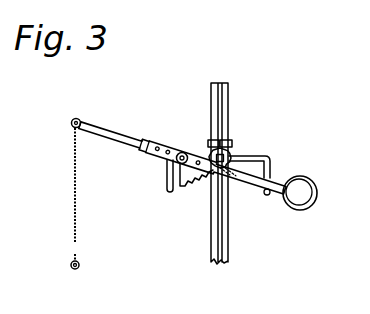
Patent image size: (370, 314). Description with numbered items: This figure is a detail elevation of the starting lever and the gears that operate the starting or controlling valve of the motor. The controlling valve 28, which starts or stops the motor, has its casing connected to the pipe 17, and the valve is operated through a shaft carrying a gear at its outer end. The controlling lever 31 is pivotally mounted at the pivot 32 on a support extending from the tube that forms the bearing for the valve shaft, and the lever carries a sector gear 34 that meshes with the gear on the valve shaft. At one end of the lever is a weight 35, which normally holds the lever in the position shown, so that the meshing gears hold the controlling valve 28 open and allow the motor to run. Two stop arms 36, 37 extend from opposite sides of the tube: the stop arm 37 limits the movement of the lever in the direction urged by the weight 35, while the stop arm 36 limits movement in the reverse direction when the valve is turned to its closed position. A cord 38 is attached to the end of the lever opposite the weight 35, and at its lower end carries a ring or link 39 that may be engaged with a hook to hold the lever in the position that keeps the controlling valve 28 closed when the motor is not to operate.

The pipe 17 is at (230, 103).
The controlling valve 28 is at (233, 150).
The controlling lever 31 is at (134, 139).
The pivot 32 is at (182, 152).
The sector gear 34 is at (192, 189).
The weight 35 is at (307, 188).
The stop arm 36 is at (167, 192).
The stop arm 37 is at (272, 171).
The cord 38 is at (77, 184).
The ring or link 39 is at (74, 270).